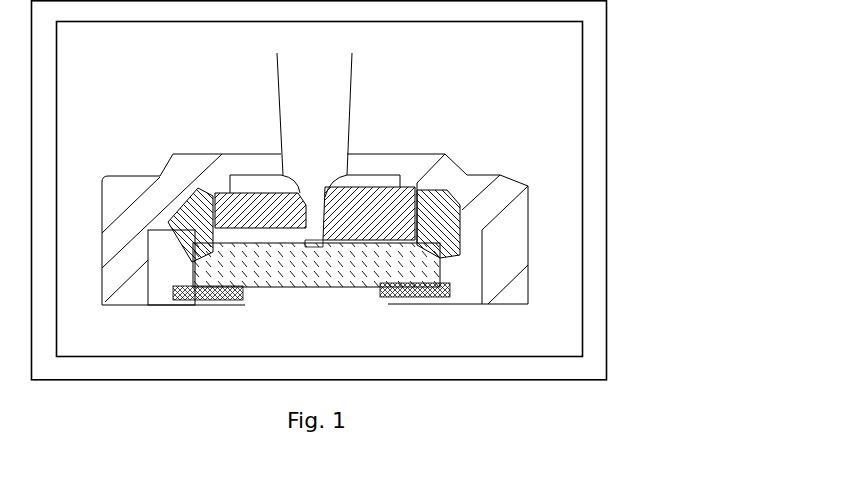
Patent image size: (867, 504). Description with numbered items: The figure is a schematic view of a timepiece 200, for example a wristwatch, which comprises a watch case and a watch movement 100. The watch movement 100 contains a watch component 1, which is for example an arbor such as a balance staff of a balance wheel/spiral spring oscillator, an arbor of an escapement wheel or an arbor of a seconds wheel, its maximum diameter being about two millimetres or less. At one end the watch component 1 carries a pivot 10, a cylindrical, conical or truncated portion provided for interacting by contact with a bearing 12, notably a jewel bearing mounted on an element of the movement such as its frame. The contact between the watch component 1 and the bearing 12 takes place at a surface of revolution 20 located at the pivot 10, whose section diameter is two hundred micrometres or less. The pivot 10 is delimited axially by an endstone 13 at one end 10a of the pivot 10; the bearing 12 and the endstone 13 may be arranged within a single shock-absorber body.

The watch component 1 is at (372, 128).
The pivot 10 is at (313, 228).
The end of the pivot 10a is at (314, 241).
The bearing 12 is at (278, 215).
The endstone 13 is at (222, 268).
The surface of revolution 20 is at (313, 225).
The watch movement 100 is at (615, 200).
The timepiece 200 is at (613, 95).